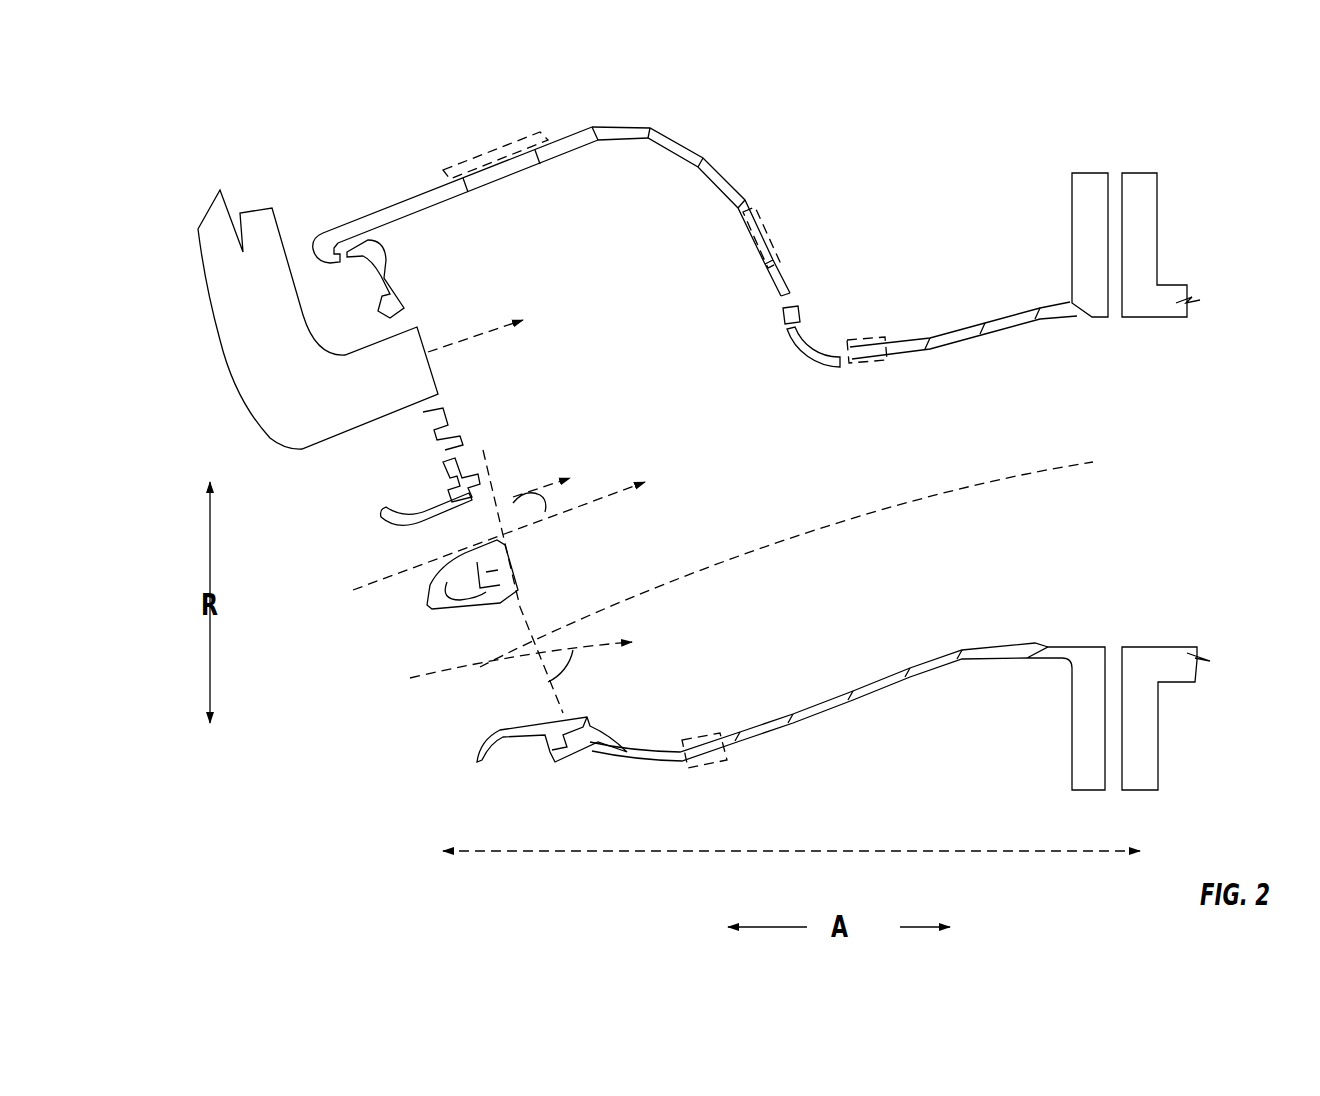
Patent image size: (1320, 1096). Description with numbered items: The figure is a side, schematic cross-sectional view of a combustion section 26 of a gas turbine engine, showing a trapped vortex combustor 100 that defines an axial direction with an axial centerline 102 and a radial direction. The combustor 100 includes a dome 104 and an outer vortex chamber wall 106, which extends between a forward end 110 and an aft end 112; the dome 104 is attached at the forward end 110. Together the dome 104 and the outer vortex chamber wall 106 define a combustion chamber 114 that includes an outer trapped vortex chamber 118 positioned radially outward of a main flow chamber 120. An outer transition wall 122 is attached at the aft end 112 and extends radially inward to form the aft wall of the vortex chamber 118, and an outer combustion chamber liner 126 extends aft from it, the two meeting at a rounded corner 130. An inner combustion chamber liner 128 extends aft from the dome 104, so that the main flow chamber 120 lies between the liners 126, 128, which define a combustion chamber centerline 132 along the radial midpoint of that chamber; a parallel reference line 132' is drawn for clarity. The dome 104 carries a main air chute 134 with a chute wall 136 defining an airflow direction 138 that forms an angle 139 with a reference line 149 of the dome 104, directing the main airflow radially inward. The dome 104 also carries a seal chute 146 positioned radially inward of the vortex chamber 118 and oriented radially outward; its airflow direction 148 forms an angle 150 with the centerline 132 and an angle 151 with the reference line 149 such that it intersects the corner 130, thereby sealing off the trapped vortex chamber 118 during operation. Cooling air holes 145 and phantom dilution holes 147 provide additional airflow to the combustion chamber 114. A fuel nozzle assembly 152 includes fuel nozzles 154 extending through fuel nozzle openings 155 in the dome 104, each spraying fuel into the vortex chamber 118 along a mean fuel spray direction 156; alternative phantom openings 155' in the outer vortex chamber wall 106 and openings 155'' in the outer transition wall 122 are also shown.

The combustion section 26 is at (845, 97).
The trapped vortex combustor 100 is at (915, 105).
The axial centerline 102 is at (968, 851).
The dome 104 is at (450, 450).
The outer vortex chamber wall 106 is at (492, 160).
The forward end 110 is at (355, 205).
The aft end 112 is at (620, 108).
The combustion chamber 114 is at (787, 383).
The outer trapped vortex chamber 118 is at (690, 215).
The main flow chamber 120 is at (898, 378).
The outer transition wall 122 is at (757, 220).
The outer combustion chamber liner 126 is at (993, 315).
The inner combustion chamber liner 128 is at (822, 714).
The corner 130 is at (819, 372).
The combustion chamber centerline 132 is at (786, 564).
The reference line 132' is at (501, 536).
The main air chute 134 is at (480, 718).
The chute wall 136 is at (467, 610).
The airflow direction 138 is at (592, 650).
The angle 139 is at (564, 672).
The cooling air holes 145 is at (908, 688).
The seal chute 146 is at (398, 545).
The dilution holes 147 is at (875, 340).
The airflow direction 148 is at (517, 497).
The reference line 149 is at (445, 470).
The angle 150 is at (545, 505).
The angle 151 is at (490, 475).
The fuel nozzle assembly 152 is at (298, 240).
The fuel nozzle 154 is at (316, 409).
The fuel nozzle opening 155 is at (400, 279).
The openings 155' is at (566, 86).
The openings 155'' is at (816, 234).
The mean fuel spray direction 156 is at (470, 330).